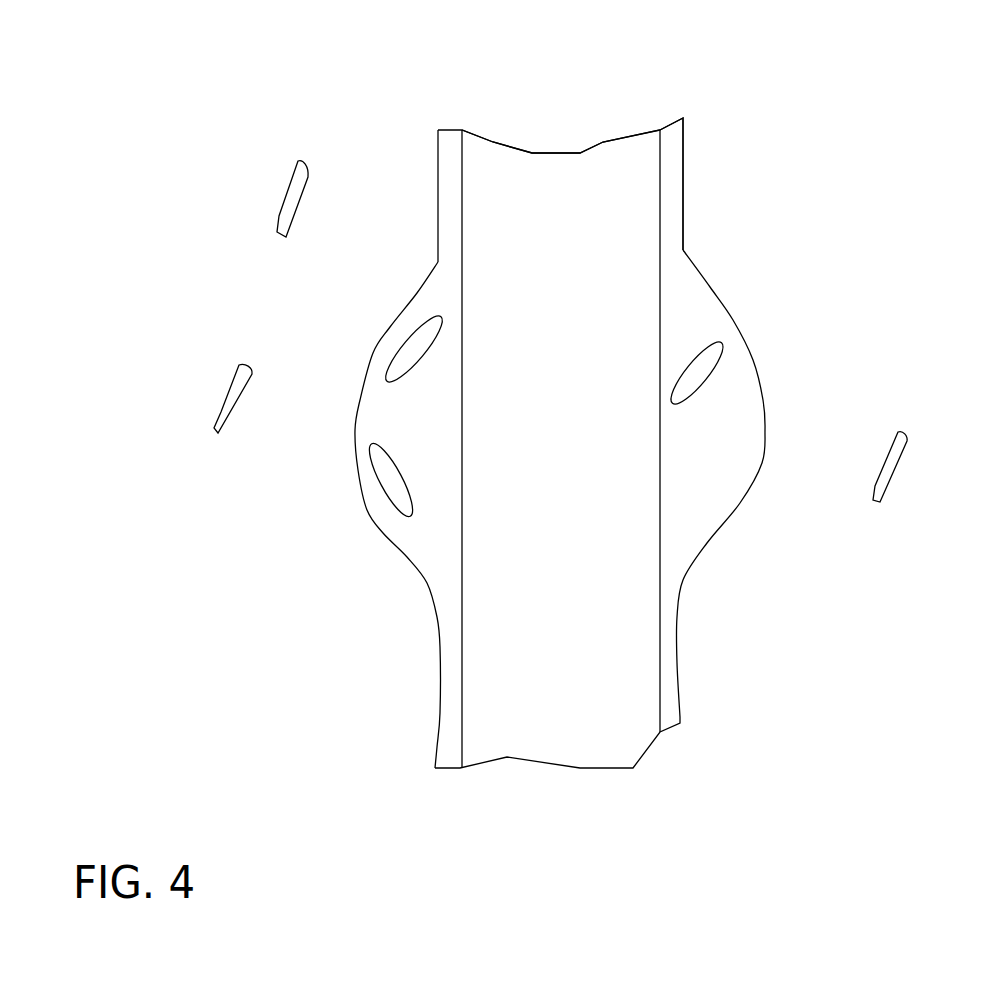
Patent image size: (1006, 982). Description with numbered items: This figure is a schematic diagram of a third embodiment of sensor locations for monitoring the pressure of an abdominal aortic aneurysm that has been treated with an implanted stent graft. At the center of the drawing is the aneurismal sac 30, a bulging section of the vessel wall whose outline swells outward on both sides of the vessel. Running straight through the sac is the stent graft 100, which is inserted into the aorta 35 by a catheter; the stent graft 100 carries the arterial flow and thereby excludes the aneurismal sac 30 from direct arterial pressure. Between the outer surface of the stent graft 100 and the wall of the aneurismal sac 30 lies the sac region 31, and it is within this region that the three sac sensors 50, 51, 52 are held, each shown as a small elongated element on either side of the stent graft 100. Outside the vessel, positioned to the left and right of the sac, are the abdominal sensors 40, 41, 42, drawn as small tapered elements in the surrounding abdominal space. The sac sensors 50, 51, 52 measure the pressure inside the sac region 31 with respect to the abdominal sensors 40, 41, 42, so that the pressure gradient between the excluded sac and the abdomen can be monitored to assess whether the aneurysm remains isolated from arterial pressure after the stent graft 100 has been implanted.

The aneurismal sac 30 is at (298, 451).
The sac region 31 is at (707, 485).
The aorta 35 is at (687, 167).
The stent graft 100 is at (508, 188).
The abdominal sensor 40 is at (287, 177).
The abdominal sensor 41 is at (225, 372).
The abdominal sensor 42 is at (905, 443).
The sac sensor 50 is at (393, 342).
The sac sensor 51 is at (402, 508).
The sac sensor 52 is at (720, 368).